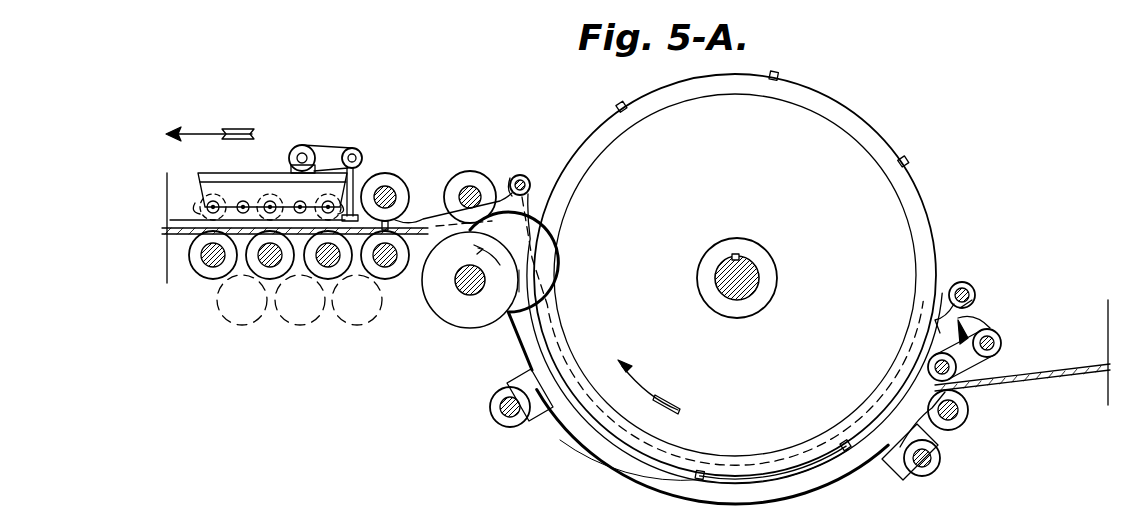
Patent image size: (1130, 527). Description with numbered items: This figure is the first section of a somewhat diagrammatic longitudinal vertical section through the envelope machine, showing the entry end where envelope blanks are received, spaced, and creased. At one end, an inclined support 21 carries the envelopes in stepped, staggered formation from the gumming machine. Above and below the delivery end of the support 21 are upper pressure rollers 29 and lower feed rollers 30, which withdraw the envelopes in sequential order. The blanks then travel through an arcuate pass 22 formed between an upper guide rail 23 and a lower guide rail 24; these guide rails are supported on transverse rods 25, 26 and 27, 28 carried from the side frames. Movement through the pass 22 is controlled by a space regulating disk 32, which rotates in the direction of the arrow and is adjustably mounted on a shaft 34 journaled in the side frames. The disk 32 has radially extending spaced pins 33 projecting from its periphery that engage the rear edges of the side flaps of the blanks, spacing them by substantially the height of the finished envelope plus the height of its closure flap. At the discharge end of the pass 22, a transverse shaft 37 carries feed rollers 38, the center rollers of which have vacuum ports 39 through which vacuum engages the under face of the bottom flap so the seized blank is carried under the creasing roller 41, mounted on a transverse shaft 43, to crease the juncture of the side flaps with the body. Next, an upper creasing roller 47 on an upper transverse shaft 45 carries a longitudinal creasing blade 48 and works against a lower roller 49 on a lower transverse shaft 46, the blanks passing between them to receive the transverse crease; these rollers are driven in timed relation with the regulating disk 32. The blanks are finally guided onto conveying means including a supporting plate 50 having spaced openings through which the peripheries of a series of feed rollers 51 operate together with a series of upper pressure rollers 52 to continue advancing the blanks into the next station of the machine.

The inclined support 21 is at (1025, 378).
The arcuate pass 22 is at (818, 471).
The upper guide rail 23 is at (541, 219).
The lower guide rail 24 is at (587, 448).
The transverse rod 25 is at (976, 297).
The transverse rod 26 is at (524, 176).
The transverse rod 27 is at (935, 470).
The transverse rod 28 is at (512, 426).
The upper pressure rollers 29 is at (991, 333).
The lower feed rollers 30 is at (970, 411).
The space regulating disk 32 is at (880, 141).
The pins 33 is at (783, 78).
The shaft 34 is at (760, 278).
The transverse shaft 37 is at (465, 294).
The feed rollers 38 is at (483, 324).
The vacuum ports 39 is at (514, 281).
The creasing roller 41 is at (482, 166).
The transverse shaft 43 is at (463, 191).
The upper transverse shaft 45 is at (391, 190).
The lower transverse shaft 46 is at (386, 274).
The upper creasing roller 47 is at (378, 176).
The longitudinal creasing blade 48 is at (403, 218).
The lower roller 49 is at (391, 280).
The supporting plate 50 is at (165, 228).
The feed rollers 51 is at (206, 278).
The upper pressure rollers 52 is at (264, 174).